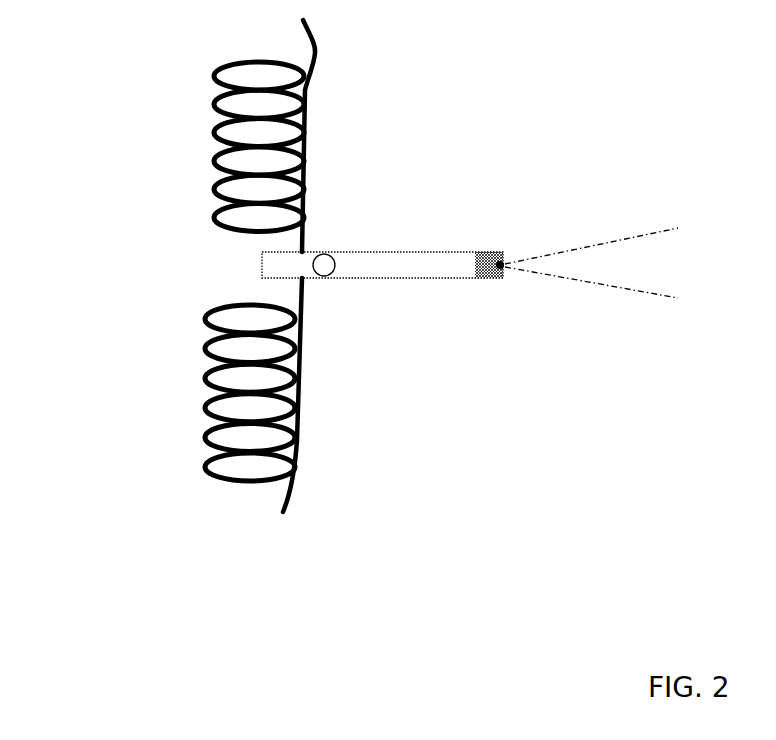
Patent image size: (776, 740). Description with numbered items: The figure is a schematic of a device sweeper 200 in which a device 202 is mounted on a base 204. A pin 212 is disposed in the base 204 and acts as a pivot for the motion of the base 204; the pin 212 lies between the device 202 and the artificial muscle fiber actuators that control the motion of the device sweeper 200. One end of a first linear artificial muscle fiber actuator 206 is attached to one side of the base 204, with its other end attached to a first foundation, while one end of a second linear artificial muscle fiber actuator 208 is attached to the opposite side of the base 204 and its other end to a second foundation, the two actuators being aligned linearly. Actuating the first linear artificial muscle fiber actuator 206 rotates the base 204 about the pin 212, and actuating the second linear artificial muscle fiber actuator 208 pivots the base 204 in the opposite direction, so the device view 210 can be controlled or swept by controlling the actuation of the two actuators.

The device sweeper 200 is at (625, 52).
The device 202 is at (490, 247).
The base 204 is at (423, 278).
The first linear artificial muscle fiber actuator 206 is at (205, 417).
The second linear artificial muscle fiber actuator 208 is at (217, 157).
The device view 210 is at (608, 285).
The pin 212 is at (325, 257).